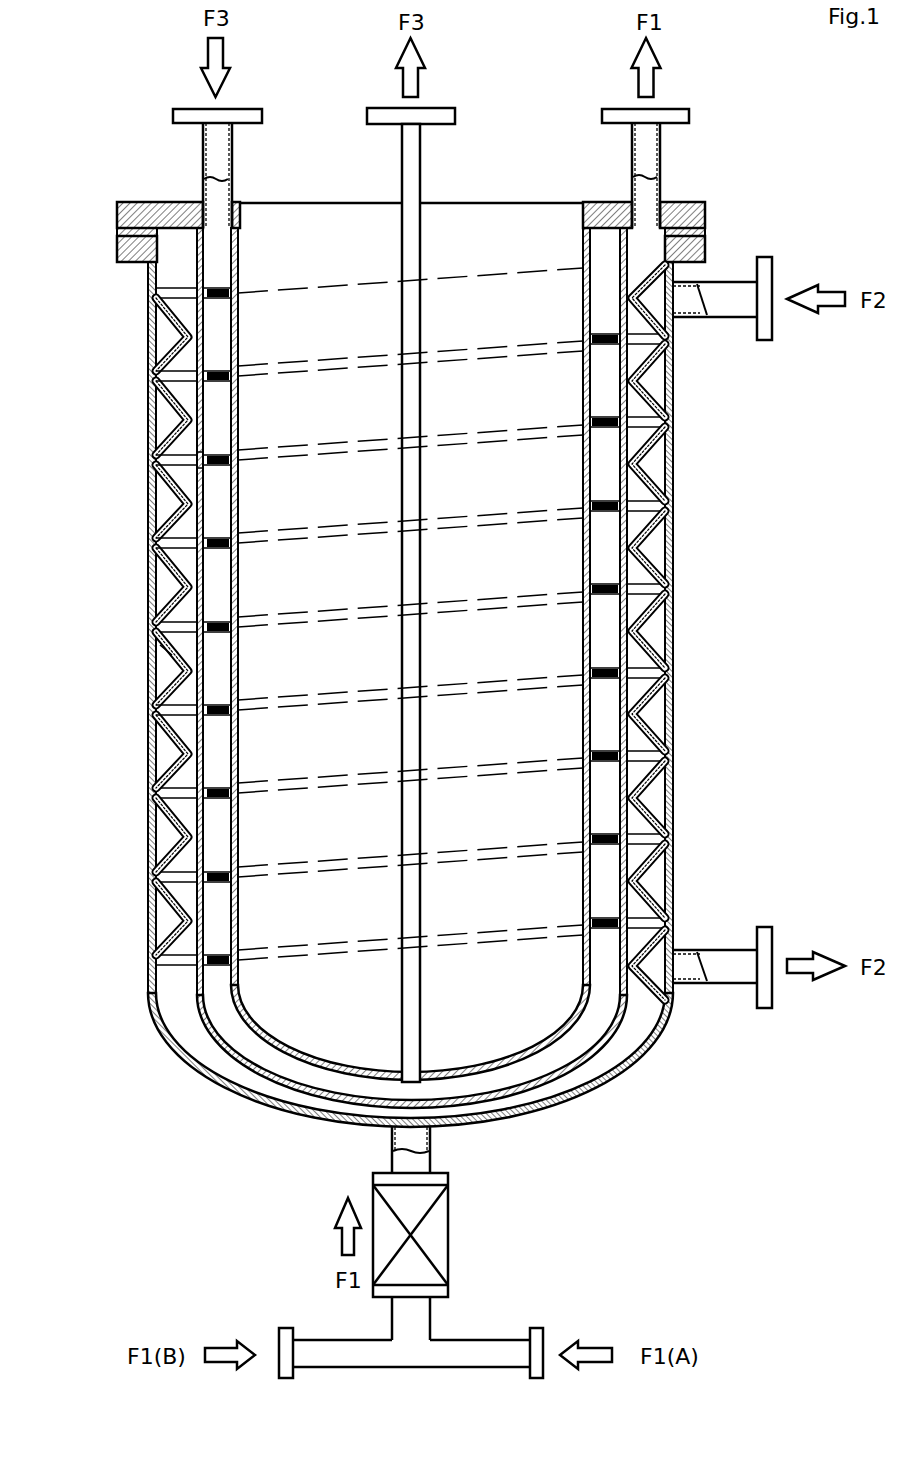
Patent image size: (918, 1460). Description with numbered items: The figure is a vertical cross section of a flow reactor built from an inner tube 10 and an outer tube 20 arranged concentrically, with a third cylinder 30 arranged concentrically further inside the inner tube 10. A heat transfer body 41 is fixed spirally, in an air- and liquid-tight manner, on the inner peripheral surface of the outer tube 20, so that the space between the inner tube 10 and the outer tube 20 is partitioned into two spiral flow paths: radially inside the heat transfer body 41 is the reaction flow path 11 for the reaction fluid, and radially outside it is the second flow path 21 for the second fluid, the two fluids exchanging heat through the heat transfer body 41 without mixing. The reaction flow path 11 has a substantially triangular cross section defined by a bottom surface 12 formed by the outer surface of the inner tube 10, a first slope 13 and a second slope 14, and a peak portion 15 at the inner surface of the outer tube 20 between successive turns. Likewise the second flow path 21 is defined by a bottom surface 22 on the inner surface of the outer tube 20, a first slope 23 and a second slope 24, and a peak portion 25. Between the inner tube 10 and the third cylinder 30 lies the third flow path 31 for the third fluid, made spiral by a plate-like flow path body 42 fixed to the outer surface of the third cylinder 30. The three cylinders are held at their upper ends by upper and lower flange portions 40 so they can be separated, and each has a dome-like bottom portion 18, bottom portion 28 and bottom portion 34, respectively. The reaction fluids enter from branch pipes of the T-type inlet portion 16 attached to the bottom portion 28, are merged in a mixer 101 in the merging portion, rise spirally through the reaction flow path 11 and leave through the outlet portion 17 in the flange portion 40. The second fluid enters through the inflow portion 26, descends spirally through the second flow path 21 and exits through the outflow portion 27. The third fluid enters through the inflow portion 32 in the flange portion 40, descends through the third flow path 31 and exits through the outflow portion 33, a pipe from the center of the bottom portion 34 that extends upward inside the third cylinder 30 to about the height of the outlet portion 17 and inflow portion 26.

The inner tube 10 is at (628, 618).
The reaction flow path 11 is at (637, 742).
The bottom surface 12 is at (205, 455).
The first slope 13 is at (163, 462).
The second slope 14 is at (175, 490).
The peak portion 15 is at (173, 548).
The inlet portion 16 is at (430, 1160).
The outlet portion 17 is at (661, 153).
The bottom portion 18 is at (573, 1058).
The outer tube 20 is at (672, 552).
The second flow path 21 is at (655, 470).
The bottom surface 22 is at (167, 665).
The first slope 23 is at (167, 653).
The second slope 24 is at (170, 688).
The peak portion 25 is at (173, 757).
The inflow portion 26 is at (722, 318).
The outflow portion 27 is at (730, 985).
The bottom portion 28 is at (643, 1058).
The third cylinder 30 is at (593, 657).
The third flow path 31 is at (603, 803).
The inflow portion 32 is at (203, 145).
The outflow portion 33 is at (422, 172).
The bottom portion 34 is at (500, 1065).
The flange portion 40 is at (147, 200).
The heat transfer body 41 is at (165, 323).
The flow path body 42 is at (210, 368).
The mixer 101 is at (449, 1228).